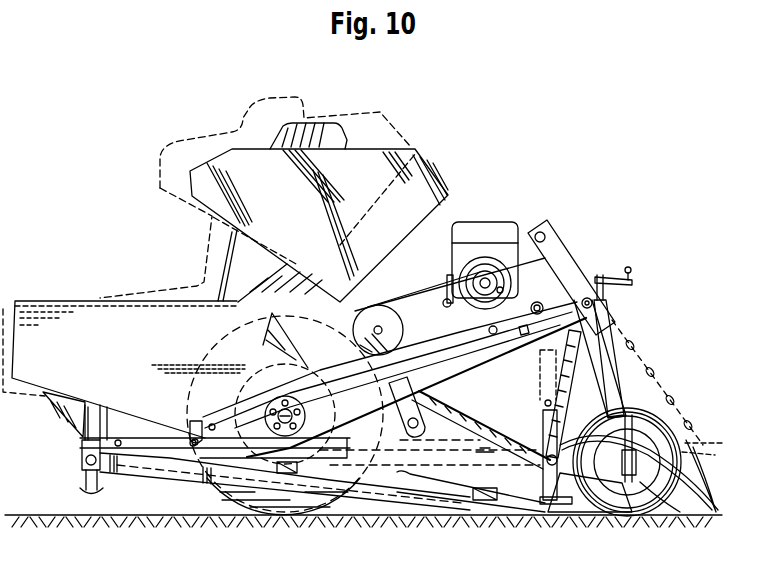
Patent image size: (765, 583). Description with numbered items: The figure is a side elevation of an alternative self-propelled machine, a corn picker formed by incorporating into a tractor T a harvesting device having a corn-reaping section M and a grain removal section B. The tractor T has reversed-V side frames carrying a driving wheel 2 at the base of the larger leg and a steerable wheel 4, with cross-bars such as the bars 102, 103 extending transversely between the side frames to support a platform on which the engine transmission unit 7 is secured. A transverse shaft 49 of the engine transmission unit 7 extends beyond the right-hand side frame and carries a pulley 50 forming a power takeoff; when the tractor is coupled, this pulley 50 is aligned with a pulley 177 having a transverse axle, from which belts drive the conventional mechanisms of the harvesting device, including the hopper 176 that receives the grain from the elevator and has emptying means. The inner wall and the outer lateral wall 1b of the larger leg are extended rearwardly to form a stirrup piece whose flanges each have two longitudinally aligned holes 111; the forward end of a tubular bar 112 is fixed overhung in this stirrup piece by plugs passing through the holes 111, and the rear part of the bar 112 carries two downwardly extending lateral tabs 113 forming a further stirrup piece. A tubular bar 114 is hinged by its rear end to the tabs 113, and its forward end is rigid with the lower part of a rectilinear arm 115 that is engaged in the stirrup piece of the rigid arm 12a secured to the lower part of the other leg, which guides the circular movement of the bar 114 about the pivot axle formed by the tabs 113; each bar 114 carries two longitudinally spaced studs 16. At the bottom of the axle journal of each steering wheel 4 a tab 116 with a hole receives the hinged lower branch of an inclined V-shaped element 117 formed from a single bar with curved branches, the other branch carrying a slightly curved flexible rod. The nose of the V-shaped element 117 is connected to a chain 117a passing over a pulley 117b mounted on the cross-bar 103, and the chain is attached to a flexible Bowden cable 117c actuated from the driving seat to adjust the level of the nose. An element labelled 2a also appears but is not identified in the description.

The hopper 176 is at (441, 167).
The engine transmission unit 7 is at (465, 220).
The transverse shaft 49 is at (487, 270).
The bar 102 is at (444, 300).
The pulley 50 is at (503, 290).
The tractor unit T is at (563, 230).
The bar 103 is at (587, 298).
The pulley 117b is at (606, 304).
The chain 117a is at (652, 378).
The steering wheel 4 is at (676, 455).
The V-shaped element 117 is at (702, 470).
The rigid arm 12a is at (566, 367).
The harvesting section M is at (471, 402).
The Bowden type cable 117c is at (496, 334).
The rectilinear arm 115 is at (545, 417).
The frame bracket 2a is at (485, 443).
The tab 116 is at (622, 512).
The studs 16 is at (285, 472).
The driving wheel 2 is at (322, 500).
The tubular bar 114 is at (128, 463).
The lateral tabs 113 is at (82, 457).
The tubular bar 112 is at (133, 441).
The holes 111 is at (228, 437).
The outer lateral wall 1b is at (262, 385).
The thresher section B is at (120, 297).
The pulley 177 is at (381, 318).